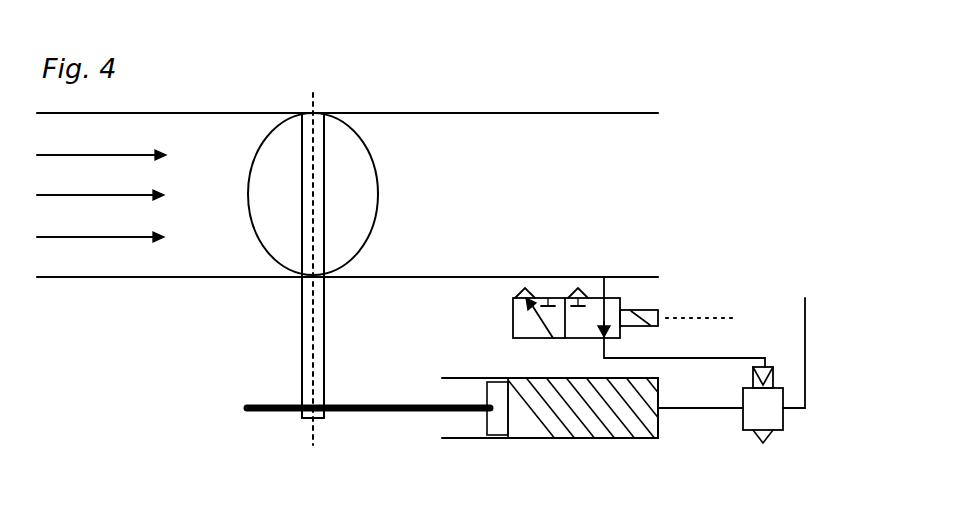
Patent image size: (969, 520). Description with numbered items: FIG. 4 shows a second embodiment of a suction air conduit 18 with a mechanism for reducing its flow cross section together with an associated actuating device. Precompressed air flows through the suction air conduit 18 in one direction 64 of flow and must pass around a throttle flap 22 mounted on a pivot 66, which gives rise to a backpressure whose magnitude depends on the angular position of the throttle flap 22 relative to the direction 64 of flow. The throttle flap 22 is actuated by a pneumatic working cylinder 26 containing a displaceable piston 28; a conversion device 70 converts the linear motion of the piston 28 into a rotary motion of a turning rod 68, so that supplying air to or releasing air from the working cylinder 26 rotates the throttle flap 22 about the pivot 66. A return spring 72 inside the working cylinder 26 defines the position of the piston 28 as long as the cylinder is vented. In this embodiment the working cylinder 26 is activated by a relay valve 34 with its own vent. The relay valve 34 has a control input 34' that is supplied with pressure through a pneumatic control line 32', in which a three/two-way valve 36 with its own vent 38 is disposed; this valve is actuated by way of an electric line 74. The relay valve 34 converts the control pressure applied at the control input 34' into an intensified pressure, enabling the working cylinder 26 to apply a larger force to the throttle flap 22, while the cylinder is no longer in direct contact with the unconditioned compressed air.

The suction air conduit 18 is at (142, 279).
The throttle flap 22 is at (382, 186).
The pneumatic working cylinder 26 is at (626, 441).
The piston 28 is at (498, 426).
The pneumatic control line 32' is at (684, 339).
The relay valve 34 is at (731, 388).
The control input 34' is at (778, 356).
The 3/2-way valve 36 is at (512, 330).
The vent 38 is at (514, 297).
The direction of flow 64 is at (166, 160).
The pivot 66 is at (317, 104).
The turning rod 68 is at (301, 326).
The conversion device 70 is at (288, 425).
The return spring 72 is at (554, 428).
The electric line 74 is at (684, 318).